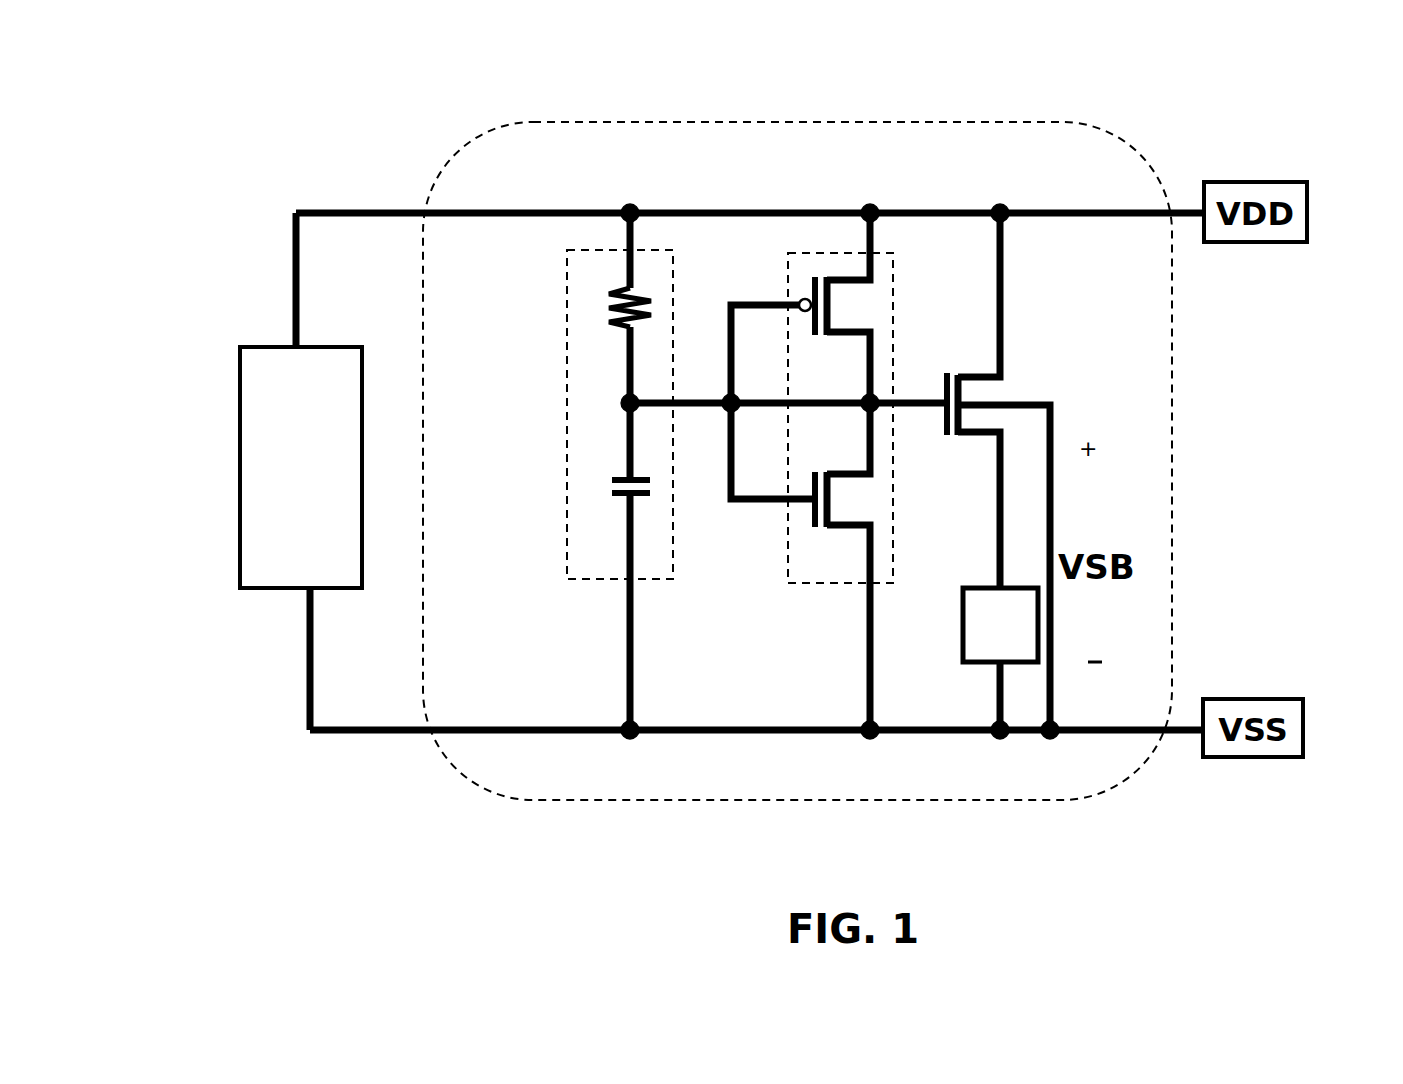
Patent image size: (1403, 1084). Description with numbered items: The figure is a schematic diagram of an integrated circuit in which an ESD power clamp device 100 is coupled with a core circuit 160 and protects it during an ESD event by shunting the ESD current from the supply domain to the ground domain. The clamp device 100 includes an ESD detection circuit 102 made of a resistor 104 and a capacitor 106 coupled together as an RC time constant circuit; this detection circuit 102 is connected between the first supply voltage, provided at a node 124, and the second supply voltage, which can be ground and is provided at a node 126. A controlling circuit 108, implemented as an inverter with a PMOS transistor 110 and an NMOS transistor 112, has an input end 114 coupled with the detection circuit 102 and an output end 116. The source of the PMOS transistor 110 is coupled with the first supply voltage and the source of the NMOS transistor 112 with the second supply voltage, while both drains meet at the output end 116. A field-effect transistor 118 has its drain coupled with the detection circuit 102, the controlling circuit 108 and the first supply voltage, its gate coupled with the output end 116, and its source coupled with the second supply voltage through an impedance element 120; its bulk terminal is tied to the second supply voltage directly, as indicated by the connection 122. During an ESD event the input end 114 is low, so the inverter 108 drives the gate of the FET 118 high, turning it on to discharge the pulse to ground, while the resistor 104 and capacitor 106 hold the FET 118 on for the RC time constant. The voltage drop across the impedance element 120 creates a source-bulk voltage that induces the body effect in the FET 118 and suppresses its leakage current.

The ESD power clamp device 100 is at (575, 114).
The ESD detection circuit 102 is at (566, 391).
The resistor 104 is at (606, 298).
The capacitor 106 is at (604, 488).
The controlling circuit 108 is at (782, 300).
The PMOS transistor 110 is at (855, 276).
The NMOS transistor 112 is at (835, 533).
The input end 114 is at (697, 394).
The output end 116 is at (913, 394).
The field-effect transistor 118 is at (978, 370).
The impedance element 120 is at (961, 626).
The bulk terminal connection 122 is at (1015, 396).
The node 124 is at (750, 200).
The node 126 is at (756, 747).
The core circuit 160 is at (262, 345).